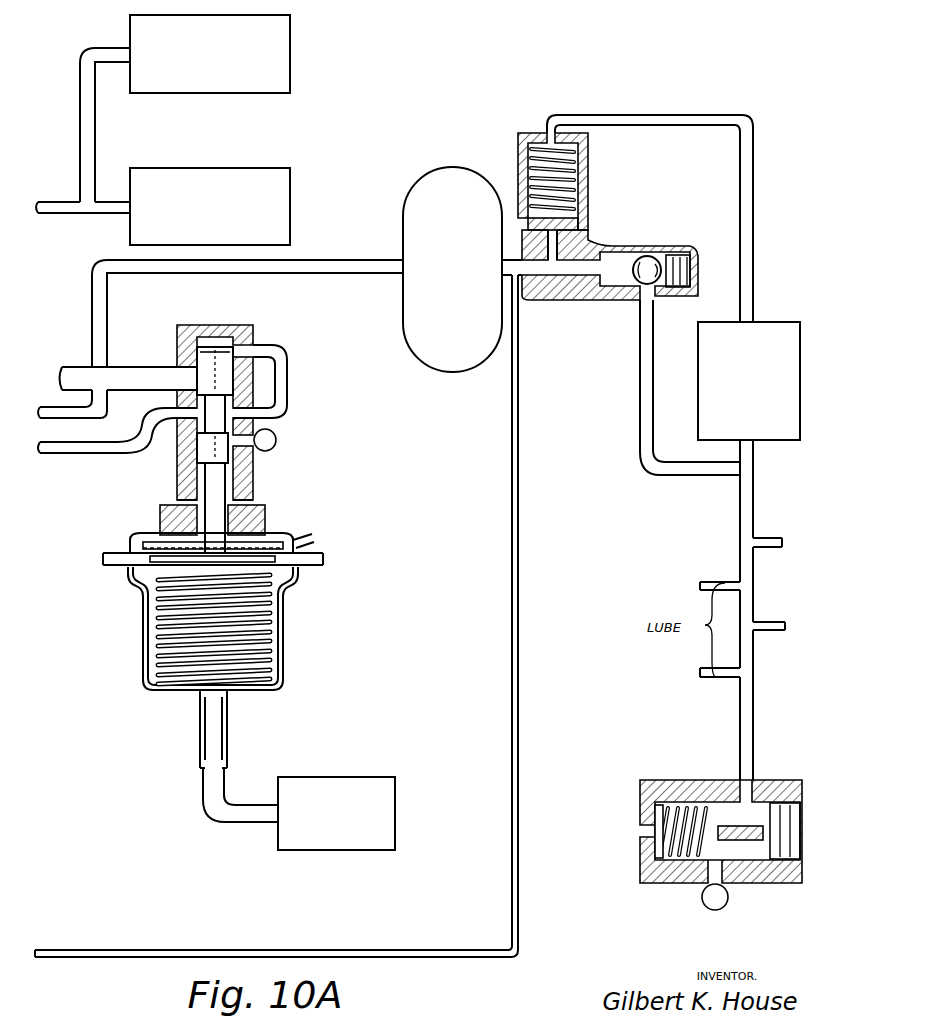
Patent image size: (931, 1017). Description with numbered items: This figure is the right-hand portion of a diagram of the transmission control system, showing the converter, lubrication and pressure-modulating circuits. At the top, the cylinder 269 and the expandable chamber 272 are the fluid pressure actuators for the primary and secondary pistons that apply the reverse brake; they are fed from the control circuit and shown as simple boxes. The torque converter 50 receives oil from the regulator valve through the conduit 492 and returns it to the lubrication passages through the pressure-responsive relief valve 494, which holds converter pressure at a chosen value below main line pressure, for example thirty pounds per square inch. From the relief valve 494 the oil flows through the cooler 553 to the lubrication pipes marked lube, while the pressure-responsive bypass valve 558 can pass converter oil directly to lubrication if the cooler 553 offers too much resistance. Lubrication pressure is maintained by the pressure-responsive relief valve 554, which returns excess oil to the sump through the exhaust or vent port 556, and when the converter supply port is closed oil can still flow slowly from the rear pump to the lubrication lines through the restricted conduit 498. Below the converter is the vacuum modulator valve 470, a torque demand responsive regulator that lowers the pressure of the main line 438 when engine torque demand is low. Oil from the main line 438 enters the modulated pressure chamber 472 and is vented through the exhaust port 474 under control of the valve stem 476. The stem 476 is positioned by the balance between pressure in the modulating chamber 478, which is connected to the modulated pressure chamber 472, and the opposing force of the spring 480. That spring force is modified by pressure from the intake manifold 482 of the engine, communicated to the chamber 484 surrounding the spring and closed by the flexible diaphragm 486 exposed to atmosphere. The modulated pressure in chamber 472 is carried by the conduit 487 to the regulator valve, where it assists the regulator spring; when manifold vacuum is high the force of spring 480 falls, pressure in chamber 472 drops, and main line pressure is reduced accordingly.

The cylinder 269 is at (294, 40).
The expandable chamber 272 is at (294, 192).
The torque converter 50 is at (440, 180).
The main line 438 is at (128, 380).
The conduit 492 is at (44, 405).
The conduit 487 is at (72, 455).
The vacuum modulator valve 470 is at (258, 333).
The valve stem 476 is at (202, 348).
The modulating chamber 478 is at (229, 346).
The modulated pressure chamber 472 is at (185, 432).
The exhaust port 474 is at (277, 441).
The flexible diaphragm 486 is at (289, 536).
The chamber 484 is at (292, 578).
The spring 480 is at (272, 628).
The intake manifold 482 is at (378, 780).
The restricted conduit 498 is at (519, 500).
The relief valve 494 is at (584, 184).
The bypass valve 558 is at (648, 257).
The cooler 553 is at (772, 322).
The relief valve 554 is at (702, 790).
The exhaust or vent port 556 is at (729, 900).